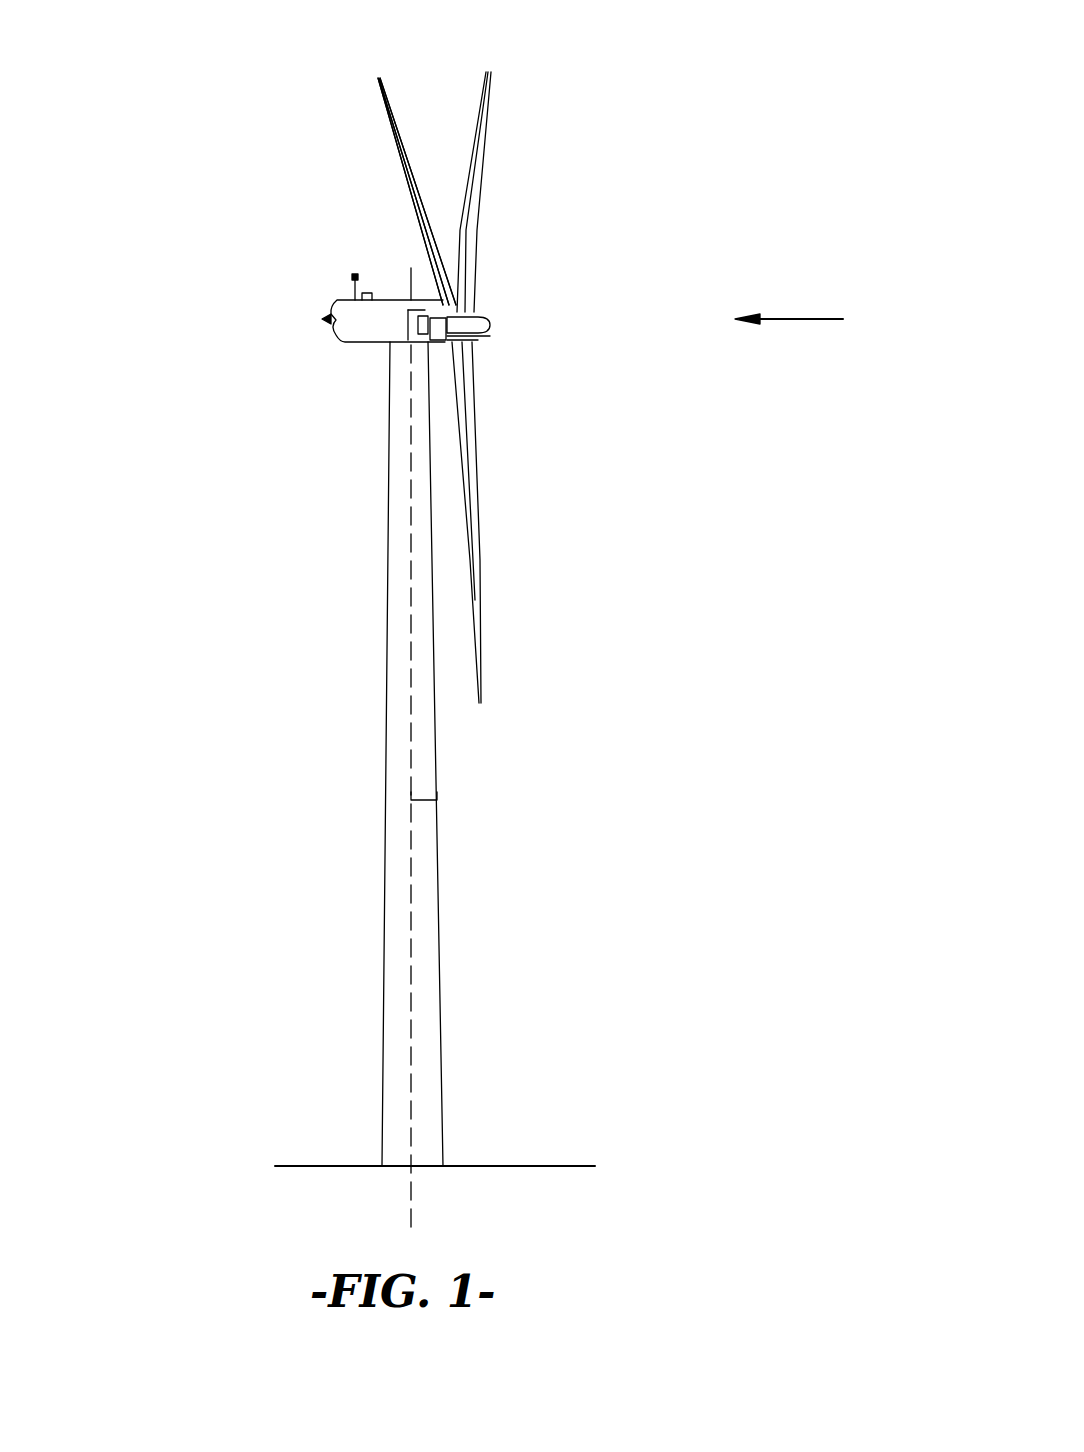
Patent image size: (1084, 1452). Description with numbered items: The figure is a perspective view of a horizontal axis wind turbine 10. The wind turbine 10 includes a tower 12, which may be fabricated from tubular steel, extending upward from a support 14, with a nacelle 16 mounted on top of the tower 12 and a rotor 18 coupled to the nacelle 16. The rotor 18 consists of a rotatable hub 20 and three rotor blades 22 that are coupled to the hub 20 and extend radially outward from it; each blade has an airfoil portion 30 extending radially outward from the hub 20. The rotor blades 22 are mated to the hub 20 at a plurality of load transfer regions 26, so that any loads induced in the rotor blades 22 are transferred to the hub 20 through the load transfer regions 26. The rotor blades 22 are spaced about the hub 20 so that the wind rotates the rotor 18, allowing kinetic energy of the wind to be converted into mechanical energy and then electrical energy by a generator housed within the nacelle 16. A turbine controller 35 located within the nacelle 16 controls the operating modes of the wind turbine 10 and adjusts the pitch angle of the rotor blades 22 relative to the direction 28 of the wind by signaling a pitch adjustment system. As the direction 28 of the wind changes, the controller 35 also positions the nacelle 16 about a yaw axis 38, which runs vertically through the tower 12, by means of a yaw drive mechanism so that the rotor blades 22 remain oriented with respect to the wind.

The wind turbine 10 is at (148, 90).
The tower 12 is at (385, 916).
The support 14 is at (338, 1163).
The nacelle 16 is at (360, 348).
The rotor 18 is at (490, 213).
The rotatable hub 20 is at (490, 312).
The rotor blades 22 is at (400, 90).
The load transfer regions 26 is at (470, 338).
The direction of the wind 28 is at (808, 318).
The airfoil portion 30 is at (405, 151).
The turbine controller 35 is at (424, 334).
The yaw axis 38 is at (437, 800).